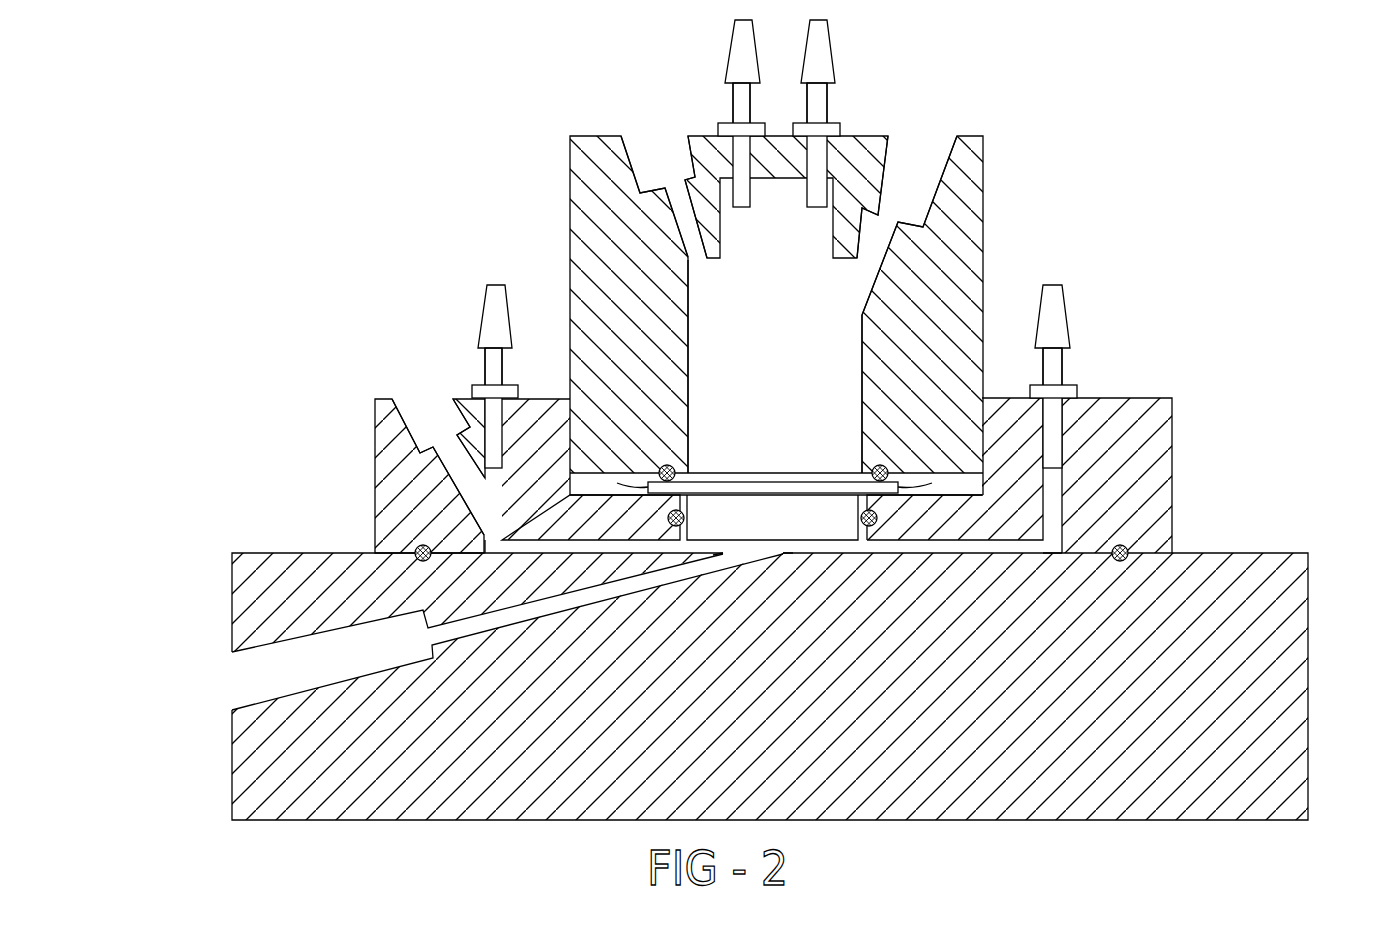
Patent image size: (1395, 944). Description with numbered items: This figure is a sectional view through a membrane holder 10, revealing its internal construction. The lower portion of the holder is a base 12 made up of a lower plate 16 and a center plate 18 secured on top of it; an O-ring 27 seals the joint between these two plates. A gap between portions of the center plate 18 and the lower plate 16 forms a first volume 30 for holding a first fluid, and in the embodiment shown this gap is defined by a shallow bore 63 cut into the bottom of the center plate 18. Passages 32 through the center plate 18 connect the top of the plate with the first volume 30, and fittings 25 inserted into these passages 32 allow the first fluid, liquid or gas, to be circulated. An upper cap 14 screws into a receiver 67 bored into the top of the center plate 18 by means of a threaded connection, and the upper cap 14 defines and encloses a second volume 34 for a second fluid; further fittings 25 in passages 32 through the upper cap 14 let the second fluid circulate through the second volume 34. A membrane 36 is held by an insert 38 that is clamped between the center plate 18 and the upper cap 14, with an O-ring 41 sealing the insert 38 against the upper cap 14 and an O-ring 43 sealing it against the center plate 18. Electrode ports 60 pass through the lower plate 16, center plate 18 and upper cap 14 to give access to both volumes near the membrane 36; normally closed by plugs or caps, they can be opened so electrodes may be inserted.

The fixture assembly 10 is at (308, 353).
The base 12 is at (1320, 501).
The upper cap 14 is at (960, 212).
The lower plate 16 is at (1295, 710).
The center plate 18 is at (375, 502).
The fittings 25 is at (742, 67).
The O-ring 27 is at (1130, 553).
The first volume 30 is at (830, 548).
The passages 32 is at (740, 163).
The second volume 34 is at (797, 353).
The membrane 36 is at (808, 488).
The insert 38 is at (752, 505).
The O-ring 41 is at (673, 470).
The O-ring 43 is at (682, 520).
The electrode ports 60 is at (250, 680).
The shallow bore 63 is at (990, 547).
The receiver 67 is at (557, 398).